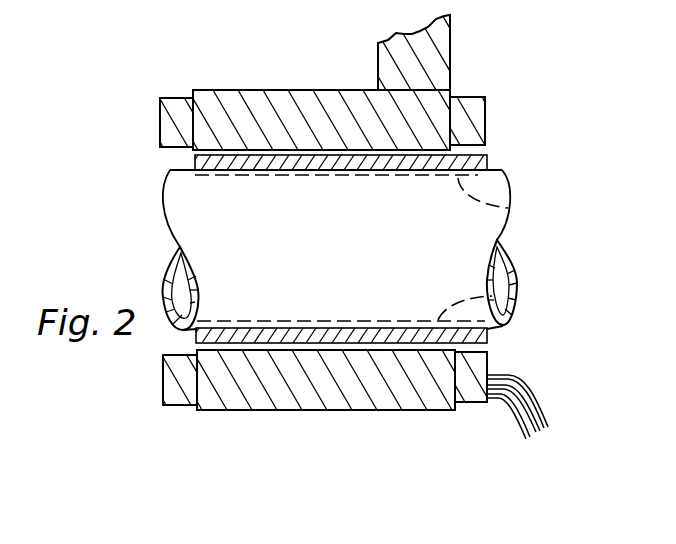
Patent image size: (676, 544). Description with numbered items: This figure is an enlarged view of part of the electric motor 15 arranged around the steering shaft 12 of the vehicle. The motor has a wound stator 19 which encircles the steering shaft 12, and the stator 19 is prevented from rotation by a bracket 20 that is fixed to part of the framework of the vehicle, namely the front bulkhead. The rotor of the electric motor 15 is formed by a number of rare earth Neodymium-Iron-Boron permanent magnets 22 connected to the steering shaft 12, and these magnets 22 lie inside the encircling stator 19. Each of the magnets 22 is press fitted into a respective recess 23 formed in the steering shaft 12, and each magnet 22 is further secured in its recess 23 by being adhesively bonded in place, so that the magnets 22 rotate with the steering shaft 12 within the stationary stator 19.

The steering shaft 12 is at (163, 195).
The electric motor 15 is at (281, 86).
The wound stator 19 is at (364, 413).
The bracket 20 is at (452, 47).
The permanent magnets 22 is at (488, 158).
The recess 23 is at (510, 208).